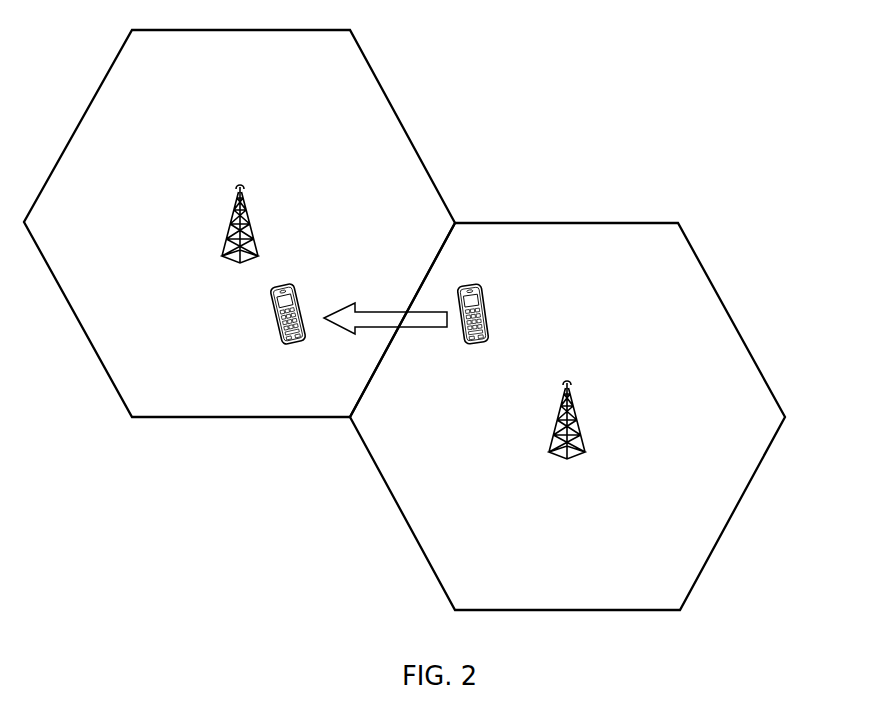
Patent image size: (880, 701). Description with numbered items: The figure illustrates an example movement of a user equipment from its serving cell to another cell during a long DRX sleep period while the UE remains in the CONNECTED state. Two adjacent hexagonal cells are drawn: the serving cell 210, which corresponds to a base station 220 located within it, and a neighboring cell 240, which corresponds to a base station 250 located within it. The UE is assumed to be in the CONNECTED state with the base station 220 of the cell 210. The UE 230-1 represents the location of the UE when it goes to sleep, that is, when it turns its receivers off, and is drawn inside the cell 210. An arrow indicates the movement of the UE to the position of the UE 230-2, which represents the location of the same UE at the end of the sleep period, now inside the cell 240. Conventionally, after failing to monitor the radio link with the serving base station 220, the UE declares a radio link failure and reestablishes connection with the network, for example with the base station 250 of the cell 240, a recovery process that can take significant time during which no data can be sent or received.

The cell 240 is at (345, 65).
The cell 210 is at (678, 251).
The base station 250 is at (224, 224).
The base station 220 is at (567, 435).
The UE 230-1 is at (472, 326).
The UE 230-2 is at (288, 326).